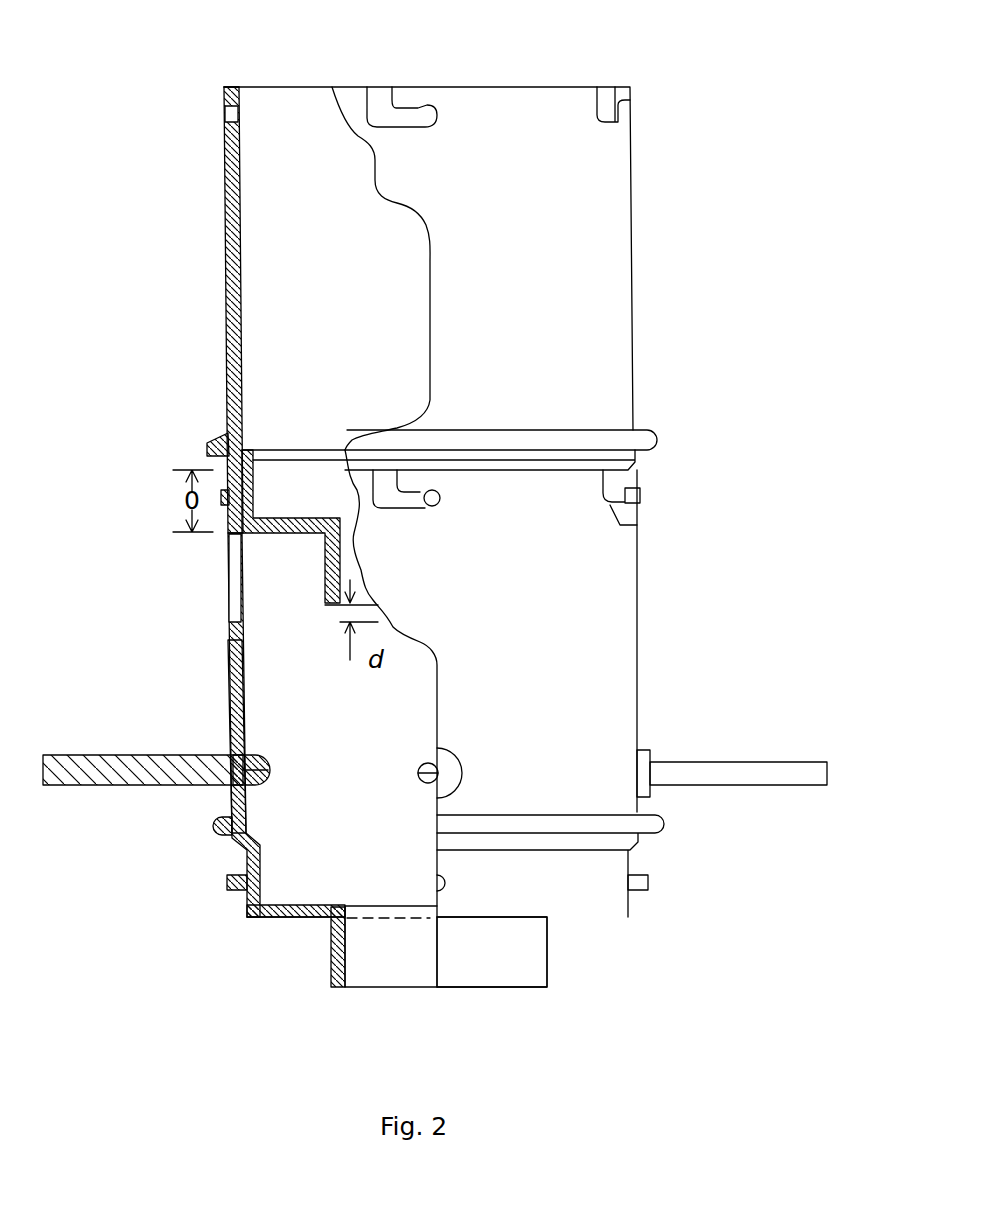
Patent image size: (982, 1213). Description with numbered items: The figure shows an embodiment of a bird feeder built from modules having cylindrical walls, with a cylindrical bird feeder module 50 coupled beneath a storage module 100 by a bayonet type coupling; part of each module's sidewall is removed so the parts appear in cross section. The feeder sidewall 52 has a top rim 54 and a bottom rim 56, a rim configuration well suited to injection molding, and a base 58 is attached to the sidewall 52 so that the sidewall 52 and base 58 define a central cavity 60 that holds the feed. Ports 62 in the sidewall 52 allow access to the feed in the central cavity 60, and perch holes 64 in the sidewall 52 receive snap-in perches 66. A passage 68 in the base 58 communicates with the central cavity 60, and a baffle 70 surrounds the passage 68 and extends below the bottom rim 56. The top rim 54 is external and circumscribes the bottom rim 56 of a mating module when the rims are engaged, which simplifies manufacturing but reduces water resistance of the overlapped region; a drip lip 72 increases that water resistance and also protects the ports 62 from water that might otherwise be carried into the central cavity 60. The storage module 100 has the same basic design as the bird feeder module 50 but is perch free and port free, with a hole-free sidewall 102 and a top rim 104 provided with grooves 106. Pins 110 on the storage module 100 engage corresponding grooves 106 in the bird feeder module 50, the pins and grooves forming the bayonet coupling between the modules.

The bird feeder module 50 is at (732, 651).
The sidewall 52 is at (206, 680).
The top rim 54 is at (640, 480).
The bottom rim 56 is at (243, 907).
The base 58 is at (325, 908).
The central cavity 60 is at (362, 841).
The ports 62 is at (228, 590).
The perch holes 64 is at (420, 770).
The snap-in perches 66 is at (115, 755).
The passage 68 is at (400, 963).
The baffle 70 is at (332, 953).
The drip lip 72 is at (212, 828).
The storage module 100 is at (672, 291).
The sidewall 102 is at (226, 270).
The top rim 104 is at (224, 87).
The grooves 106 is at (387, 87).
The pins 110 is at (440, 505).